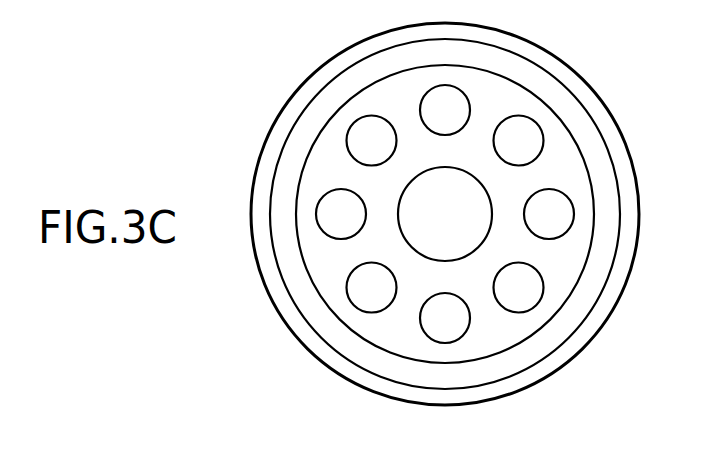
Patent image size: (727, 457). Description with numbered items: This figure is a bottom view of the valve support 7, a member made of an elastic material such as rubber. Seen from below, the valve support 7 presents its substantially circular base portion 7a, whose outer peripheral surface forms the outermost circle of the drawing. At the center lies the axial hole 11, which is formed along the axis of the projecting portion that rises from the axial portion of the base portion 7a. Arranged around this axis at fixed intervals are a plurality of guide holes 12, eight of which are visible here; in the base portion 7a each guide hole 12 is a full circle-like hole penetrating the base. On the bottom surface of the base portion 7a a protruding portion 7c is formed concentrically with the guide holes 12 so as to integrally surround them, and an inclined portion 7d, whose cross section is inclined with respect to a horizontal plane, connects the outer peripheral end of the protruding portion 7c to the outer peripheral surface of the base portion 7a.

The valve support 7 is at (463, 215).
The base portion 7a is at (626, 290).
The protruding portion 7c is at (578, 328).
The inclined portion 7d is at (463, 215).
The axial hole 11 is at (418, 235).
The guide holes 12 is at (550, 200).